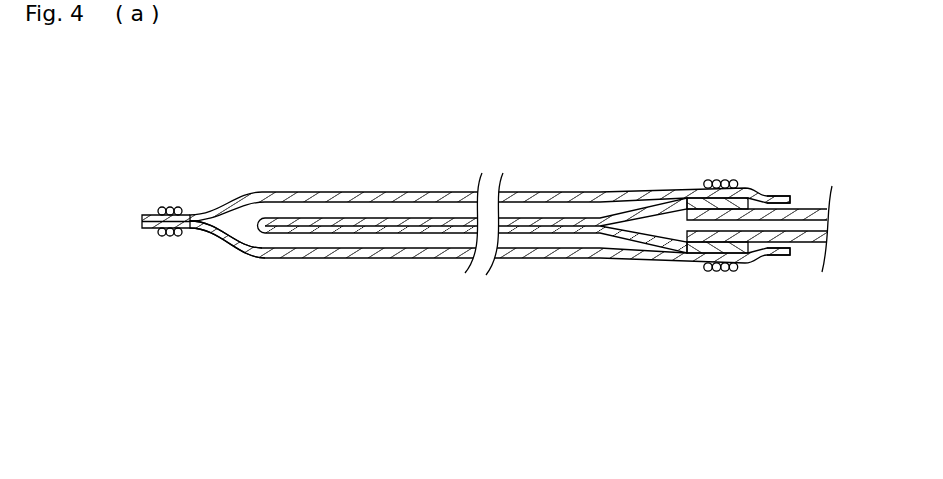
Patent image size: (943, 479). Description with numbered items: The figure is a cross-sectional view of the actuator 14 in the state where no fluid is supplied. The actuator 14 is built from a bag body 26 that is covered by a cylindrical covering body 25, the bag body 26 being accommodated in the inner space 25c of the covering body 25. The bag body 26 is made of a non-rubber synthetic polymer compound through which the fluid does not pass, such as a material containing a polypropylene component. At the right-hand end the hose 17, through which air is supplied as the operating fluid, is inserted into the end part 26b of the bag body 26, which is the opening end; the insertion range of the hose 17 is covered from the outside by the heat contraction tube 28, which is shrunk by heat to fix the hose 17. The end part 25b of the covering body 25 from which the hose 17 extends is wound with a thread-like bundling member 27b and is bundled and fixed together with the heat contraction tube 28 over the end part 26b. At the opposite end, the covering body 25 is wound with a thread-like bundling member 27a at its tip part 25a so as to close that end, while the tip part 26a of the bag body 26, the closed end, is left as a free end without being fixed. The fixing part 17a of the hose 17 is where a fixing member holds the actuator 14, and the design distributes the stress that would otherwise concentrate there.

The actuator 14 is at (850, 338).
The hose 17 is at (810, 209).
The fixing part 17a is at (700, 200).
The covering body 25 is at (373, 190).
The tip part 25a is at (144, 213).
The end part 25b is at (780, 195).
The inner space 25c is at (307, 217).
The bag body 26 is at (375, 240).
The tip part 26a is at (249, 227).
The end part 26b is at (705, 250).
The thread-like bundling member 27a is at (177, 207).
The thread-like bundling member 27b is at (716, 179).
The heat contraction tube 28 is at (759, 262).